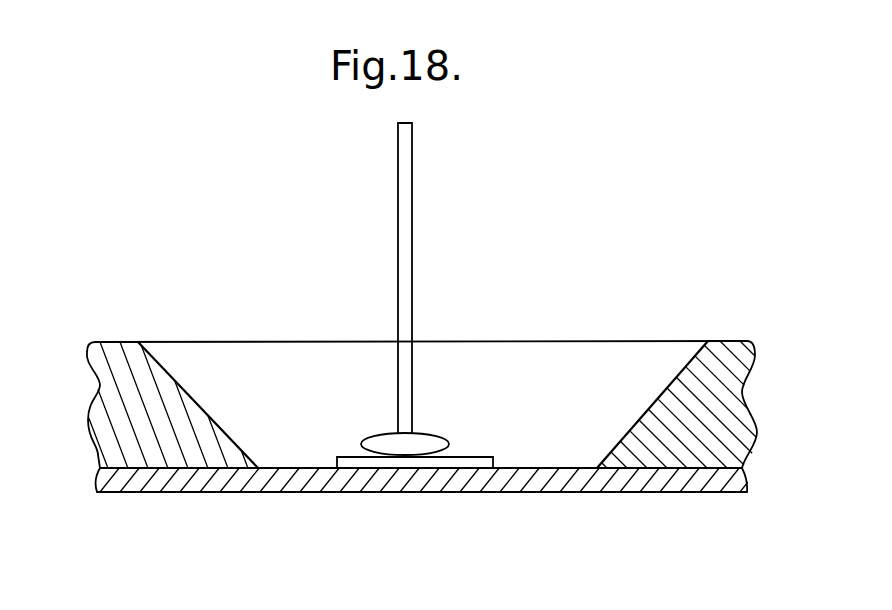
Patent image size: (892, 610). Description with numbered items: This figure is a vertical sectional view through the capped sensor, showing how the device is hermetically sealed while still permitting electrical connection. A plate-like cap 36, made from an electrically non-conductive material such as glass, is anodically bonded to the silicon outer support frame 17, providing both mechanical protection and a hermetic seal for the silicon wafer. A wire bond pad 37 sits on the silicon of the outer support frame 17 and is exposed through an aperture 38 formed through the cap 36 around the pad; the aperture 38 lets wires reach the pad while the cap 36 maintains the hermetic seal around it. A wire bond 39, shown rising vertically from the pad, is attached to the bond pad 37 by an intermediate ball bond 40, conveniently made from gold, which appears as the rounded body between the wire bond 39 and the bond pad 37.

The outer support frame 17 is at (608, 487).
The plate-like cap 36 is at (722, 348).
The wire bond pad 37 is at (477, 463).
The aperture 38 is at (175, 380).
The wire bond 39 is at (407, 260).
The ball bond 40 is at (385, 442).